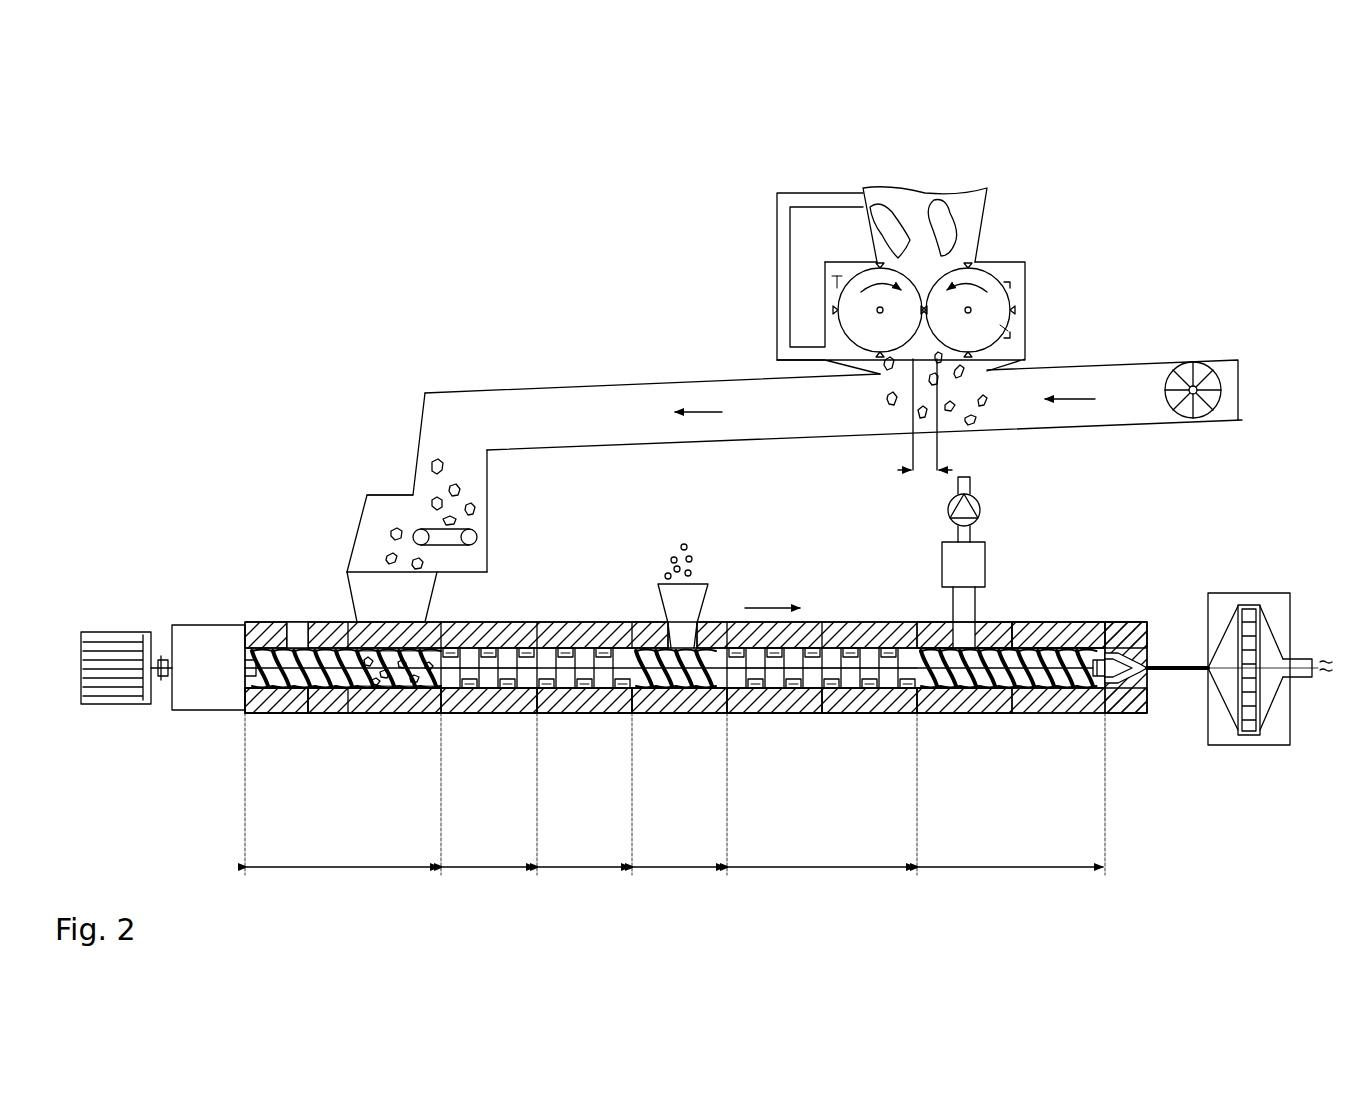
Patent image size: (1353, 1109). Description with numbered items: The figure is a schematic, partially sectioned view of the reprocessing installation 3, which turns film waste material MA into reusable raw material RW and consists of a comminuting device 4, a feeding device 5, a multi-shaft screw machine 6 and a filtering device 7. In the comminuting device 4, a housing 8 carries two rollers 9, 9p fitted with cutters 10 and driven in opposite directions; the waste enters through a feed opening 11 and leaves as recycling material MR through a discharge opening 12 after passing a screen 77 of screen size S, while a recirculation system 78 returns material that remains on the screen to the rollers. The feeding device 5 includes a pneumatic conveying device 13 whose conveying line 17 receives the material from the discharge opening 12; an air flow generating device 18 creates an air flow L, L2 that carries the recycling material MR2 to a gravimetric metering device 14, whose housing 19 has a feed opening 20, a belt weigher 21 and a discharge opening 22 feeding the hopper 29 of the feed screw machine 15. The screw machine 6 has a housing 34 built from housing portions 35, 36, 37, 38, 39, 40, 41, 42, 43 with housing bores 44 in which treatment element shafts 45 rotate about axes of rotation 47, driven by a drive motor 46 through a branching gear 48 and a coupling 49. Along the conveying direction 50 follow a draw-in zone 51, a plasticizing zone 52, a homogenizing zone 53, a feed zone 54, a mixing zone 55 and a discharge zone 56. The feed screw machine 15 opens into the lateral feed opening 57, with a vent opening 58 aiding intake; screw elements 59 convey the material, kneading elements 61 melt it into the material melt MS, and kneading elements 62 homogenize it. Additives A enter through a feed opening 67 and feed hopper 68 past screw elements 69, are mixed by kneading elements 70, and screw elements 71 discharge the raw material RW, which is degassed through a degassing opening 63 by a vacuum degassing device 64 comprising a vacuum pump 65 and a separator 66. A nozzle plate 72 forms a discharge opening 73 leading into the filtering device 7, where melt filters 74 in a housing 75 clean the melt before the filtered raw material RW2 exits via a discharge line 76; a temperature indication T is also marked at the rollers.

The reprocessing installation 3 is at (530, 215).
The comminuting device 4 is at (909, 189).
The feeding device 5 is at (416, 442).
The multi-shaft screw machine 6 is at (676, 604).
The filtering device 7 is at (1270, 665).
The housing 8 is at (929, 294).
The roller 9 is at (1008, 300).
The roller 9p is at (845, 305).
The cutters 10 is at (997, 278).
The feed opening 11 is at (928, 262).
The discharge opening 12 is at (975, 372).
The pneumatic conveying device 13 is at (833, 384).
The gravimetric metering device 14 is at (489, 510).
The feed screw machine 15 is at (345, 590).
The conveying line 17 is at (587, 400).
The air flow generating device 18 is at (1190, 362).
The housing 19 is at (365, 500).
The feed opening 20 is at (452, 452).
The belt weigher 21 is at (477, 537).
The discharge opening 22 is at (425, 572).
The hopper 29 is at (380, 583).
The housing 34 is at (263, 617).
The housing portion 35 is at (282, 712).
The housing portion 36 is at (392, 705).
The housing portion 37 is at (508, 712).
The housing portion 38 is at (603, 712).
The housing portion 39 is at (692, 712).
The housing portion 40 is at (830, 712).
The housing portion 41 is at (918, 712).
The housing portion 42 is at (975, 712).
The housing portion 43 is at (1078, 712).
The housing bore 44 is at (990, 620).
The treatment element shaft 45 is at (1052, 625).
The drive motor 46 is at (91, 630).
The axis of rotation 47 is at (246, 700).
The branching gear 48 is at (210, 640).
The coupling 49 is at (158, 660).
The conveying direction 50 is at (765, 608).
The draw-in zone 51 is at (343, 794).
The plasticizing zone 52 is at (490, 794).
The homogenizing zone 53 is at (585, 794).
The feed zone 54 is at (680, 794).
The mixing zone 55 is at (823, 794).
The discharge zone 56 is at (1012, 794).
The feed opening 57 is at (398, 713).
The vent opening 58 is at (293, 625).
The screw element 59 is at (308, 705).
The kneading element 61 is at (540, 712).
The kneading element 62 is at (635, 712).
The degassing opening 63 is at (921, 547).
The vacuum degassing device 64 is at (946, 529).
The vacuum pump 65 is at (960, 505).
The separator 66 is at (945, 550).
The feed opening 67 is at (667, 625).
The feed hopper 68 is at (672, 592).
The screw element 69 is at (730, 712).
The kneading element 70 is at (775, 712).
The screw element 71 is at (1010, 712).
The nozzle plate 72 is at (1125, 622).
The discharge opening 73 is at (1175, 660).
The melt filter 74 is at (1250, 735).
The housing 75 is at (1218, 742).
The discharge line 76 is at (1300, 660).
The screen 77 is at (1000, 330).
The recirculation system 78 is at (791, 197).
The film waste material MA is at (943, 213).
The recycling material MR is at (437, 466).
The recycling material MR2 is at (980, 420).
The material melt MS is at (470, 712).
The raw material RW is at (880, 712).
The raw material RW2 is at (1325, 680).
The air flow L is at (1065, 402).
The air flow L2 is at (715, 420).
The additives A is at (690, 571).
The screen size S is at (925, 454).
The temperature T is at (837, 277).